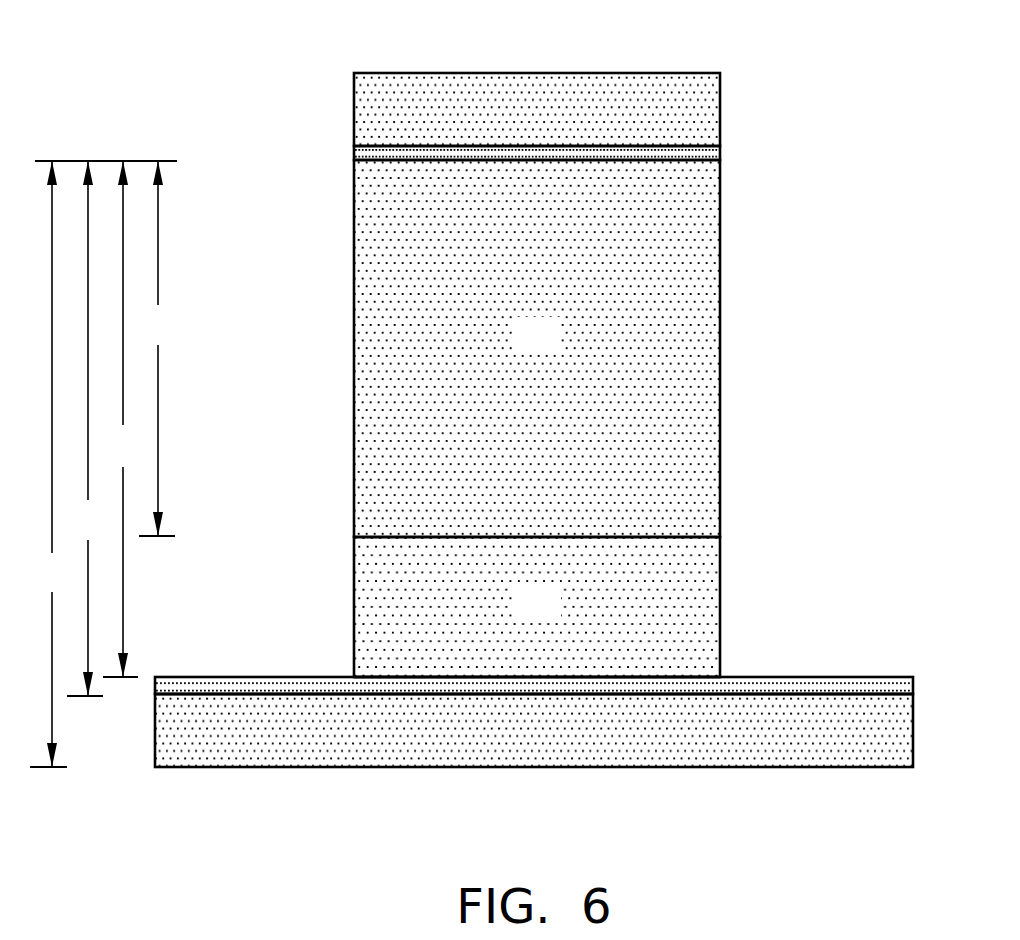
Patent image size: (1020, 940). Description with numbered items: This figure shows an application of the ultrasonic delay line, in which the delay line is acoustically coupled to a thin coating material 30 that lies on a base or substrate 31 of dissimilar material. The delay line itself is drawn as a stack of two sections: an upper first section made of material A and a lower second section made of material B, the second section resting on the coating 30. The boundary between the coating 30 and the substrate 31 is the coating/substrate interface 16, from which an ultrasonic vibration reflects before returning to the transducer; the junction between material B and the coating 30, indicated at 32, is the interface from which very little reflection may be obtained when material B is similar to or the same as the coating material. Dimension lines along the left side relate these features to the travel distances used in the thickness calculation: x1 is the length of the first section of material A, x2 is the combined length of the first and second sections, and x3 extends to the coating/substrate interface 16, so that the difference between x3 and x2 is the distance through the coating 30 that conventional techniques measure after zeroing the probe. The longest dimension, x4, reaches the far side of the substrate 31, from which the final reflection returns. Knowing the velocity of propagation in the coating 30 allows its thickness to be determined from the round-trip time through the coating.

The coating/substrate interface 16 is at (858, 693).
The thin coating material 30 is at (770, 677).
The substrate 31 is at (778, 735).
The junction between pillar and layer 32 is at (612, 673).
The material A is at (537, 348).
The material B is at (537, 607).
The length of the first section x1 is at (157, 348).
The combined length of the first and second sections x2 is at (121, 419).
The distance to the coating/substrate interface x3 is at (85, 428).
The dimension x4 is at (48, 464).